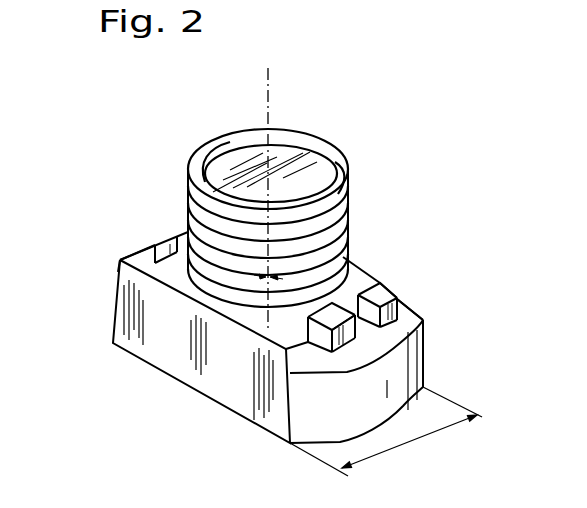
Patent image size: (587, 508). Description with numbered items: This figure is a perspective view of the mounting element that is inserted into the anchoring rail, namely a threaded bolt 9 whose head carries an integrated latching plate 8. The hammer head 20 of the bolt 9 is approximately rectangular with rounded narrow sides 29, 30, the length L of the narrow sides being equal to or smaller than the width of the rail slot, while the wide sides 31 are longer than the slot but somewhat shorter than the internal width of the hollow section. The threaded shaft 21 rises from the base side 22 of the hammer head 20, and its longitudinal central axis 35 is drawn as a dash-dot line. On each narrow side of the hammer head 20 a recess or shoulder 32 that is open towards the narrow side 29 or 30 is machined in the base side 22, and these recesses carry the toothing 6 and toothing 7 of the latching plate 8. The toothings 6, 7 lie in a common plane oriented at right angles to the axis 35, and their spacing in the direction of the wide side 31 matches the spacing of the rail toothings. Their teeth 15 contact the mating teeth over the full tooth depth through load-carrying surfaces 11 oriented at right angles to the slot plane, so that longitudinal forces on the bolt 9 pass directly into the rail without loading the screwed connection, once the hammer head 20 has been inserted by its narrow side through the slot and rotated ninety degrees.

The toothing 6 is at (363, 335).
The toothing 7 is at (163, 230).
The latching plate 8 is at (412, 292).
The threaded bolt 9 is at (172, 163).
The load-carrying surface 11 is at (148, 243).
The tooth 15 is at (112, 268).
The hammer head 20 is at (140, 322).
The threaded shaft 21 is at (313, 238).
The base side 22 is at (353, 272).
The narrow side 29 is at (393, 388).
The narrow side 30 is at (183, 232).
The wide side 31 is at (180, 348).
The recess 32 is at (160, 251).
The longitudinal central axis 35 is at (268, 88).
The length of the narrow sides L is at (417, 433).